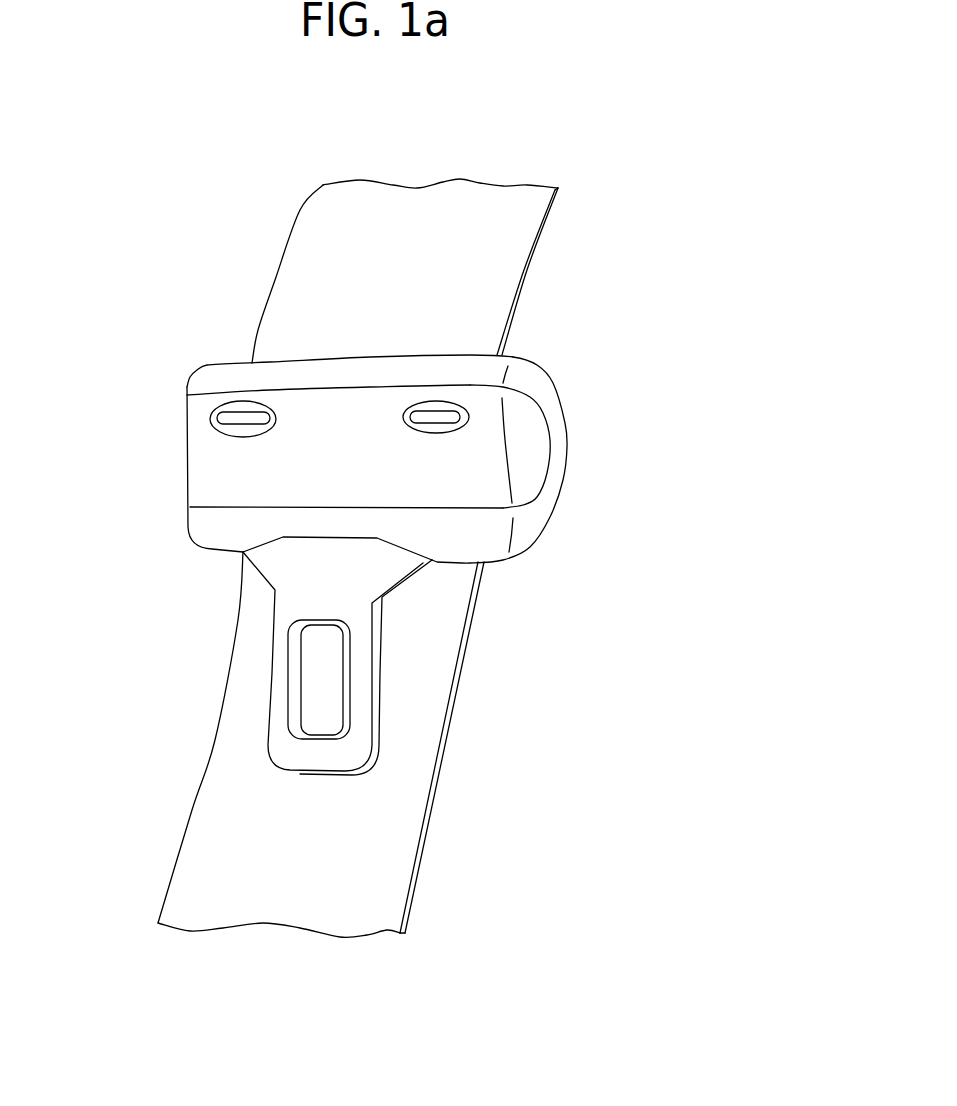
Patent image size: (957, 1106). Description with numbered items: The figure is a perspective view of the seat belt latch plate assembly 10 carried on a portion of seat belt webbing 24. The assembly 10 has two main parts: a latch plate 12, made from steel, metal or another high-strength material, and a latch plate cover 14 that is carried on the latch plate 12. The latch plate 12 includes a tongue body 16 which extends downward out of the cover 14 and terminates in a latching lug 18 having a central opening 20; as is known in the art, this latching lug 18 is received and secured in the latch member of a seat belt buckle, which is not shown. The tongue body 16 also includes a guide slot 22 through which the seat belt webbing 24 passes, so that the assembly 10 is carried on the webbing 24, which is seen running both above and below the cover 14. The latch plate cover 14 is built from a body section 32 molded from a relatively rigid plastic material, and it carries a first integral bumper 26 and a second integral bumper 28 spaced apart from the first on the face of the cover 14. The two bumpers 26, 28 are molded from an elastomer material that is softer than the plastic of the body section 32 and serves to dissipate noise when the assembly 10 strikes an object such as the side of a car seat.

The seat belt latch plate assembly 10 is at (693, 122).
The latch plate 12 is at (203, 687).
The latch plate cover 14 is at (568, 375).
The tongue body 16 is at (302, 562).
The latching lug 18 is at (273, 722).
The central opening 20 is at (343, 685).
The guide slot 22 is at (517, 318).
The seat belt webbing 24 is at (288, 278).
The first integral bumper 26 is at (212, 420).
The second integral bumper 28 is at (470, 413).
The body section 32 is at (562, 493).